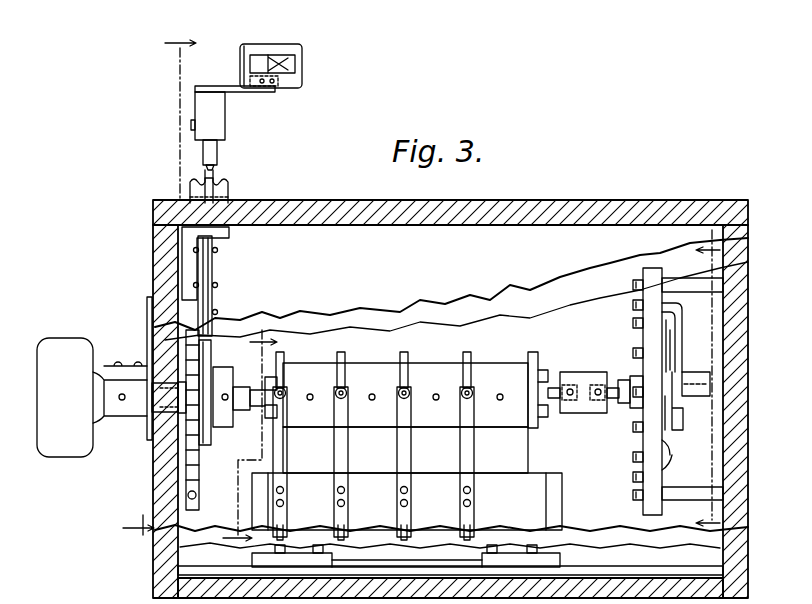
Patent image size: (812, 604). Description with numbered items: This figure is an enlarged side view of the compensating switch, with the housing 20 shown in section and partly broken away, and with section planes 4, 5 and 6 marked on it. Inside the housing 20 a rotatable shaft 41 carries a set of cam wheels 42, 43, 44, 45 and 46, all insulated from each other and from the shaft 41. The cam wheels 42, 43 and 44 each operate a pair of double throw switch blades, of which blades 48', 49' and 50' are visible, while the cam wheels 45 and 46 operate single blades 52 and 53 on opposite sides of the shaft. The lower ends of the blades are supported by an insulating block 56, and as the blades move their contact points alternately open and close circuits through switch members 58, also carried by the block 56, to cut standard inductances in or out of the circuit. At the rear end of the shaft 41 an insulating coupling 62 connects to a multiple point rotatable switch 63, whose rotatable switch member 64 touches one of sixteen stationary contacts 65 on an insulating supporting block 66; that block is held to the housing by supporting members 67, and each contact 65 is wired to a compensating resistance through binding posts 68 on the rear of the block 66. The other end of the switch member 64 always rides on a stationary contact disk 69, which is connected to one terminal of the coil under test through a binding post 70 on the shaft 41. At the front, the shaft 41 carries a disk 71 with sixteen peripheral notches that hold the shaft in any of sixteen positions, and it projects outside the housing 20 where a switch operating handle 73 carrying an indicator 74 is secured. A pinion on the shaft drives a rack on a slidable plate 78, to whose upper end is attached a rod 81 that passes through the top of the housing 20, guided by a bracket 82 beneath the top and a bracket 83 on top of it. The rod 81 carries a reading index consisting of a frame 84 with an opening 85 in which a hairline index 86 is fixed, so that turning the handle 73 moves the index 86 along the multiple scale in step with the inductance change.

The housing 20 is at (305, 199).
The section line 5- 5 is at (159, 291).
The section line 4- 4 is at (250, 438).
The section line 6- 6 is at (708, 389).
The frame 84 is at (305, 62).
The opening 85 is at (293, 57).
The hairline index 86 is at (272, 60).
The bracket 83 is at (192, 193).
The rod 81 is at (211, 188).
The bracket 82 is at (218, 233).
The switch operating handle 73 is at (58, 447).
The indicator 74 is at (147, 318).
The disk 71 is at (200, 455).
The slidable plate 78 is at (209, 352).
The cam wheel 46 is at (533, 352).
The cam wheel 42 is at (283, 360).
The cam wheel 43 is at (345, 360).
The cam wheel 44 is at (408, 360).
The cam wheel 45 is at (471, 360).
The double throw switch blade 48' is at (299, 463).
The double throw switch blade 49' is at (360, 463).
The double throw switch blade 50' is at (425, 463).
The switch blade 52 is at (473, 405).
The switch member 58 is at (463, 487).
The switch blade 53 is at (530, 452).
The block 56 is at (407, 520).
The rotatable shaft 41 is at (550, 400).
The coupling 62 is at (576, 413).
The binding post 70 is at (628, 406).
The supporting block 66 is at (650, 442).
The binding post 68 is at (636, 494).
The supporting member 67 is at (722, 272).
The rotatable switch member 64 is at (684, 320).
The multiple point rotatable switch 63 is at (695, 348).
The stationary contact disk 69 is at (684, 418).
The stationary contact 65 is at (672, 455).